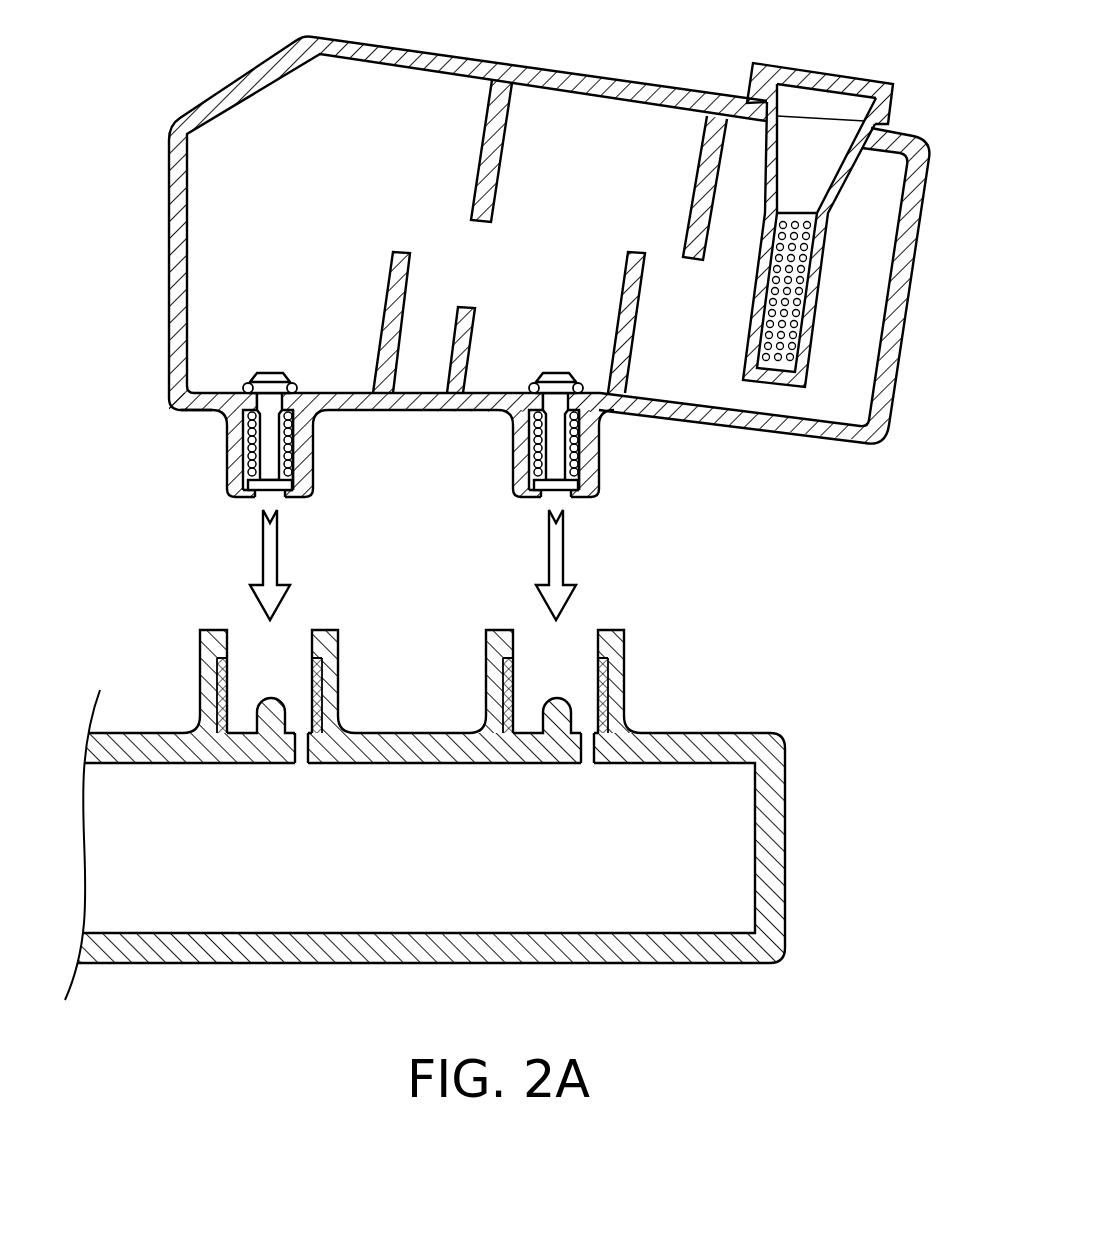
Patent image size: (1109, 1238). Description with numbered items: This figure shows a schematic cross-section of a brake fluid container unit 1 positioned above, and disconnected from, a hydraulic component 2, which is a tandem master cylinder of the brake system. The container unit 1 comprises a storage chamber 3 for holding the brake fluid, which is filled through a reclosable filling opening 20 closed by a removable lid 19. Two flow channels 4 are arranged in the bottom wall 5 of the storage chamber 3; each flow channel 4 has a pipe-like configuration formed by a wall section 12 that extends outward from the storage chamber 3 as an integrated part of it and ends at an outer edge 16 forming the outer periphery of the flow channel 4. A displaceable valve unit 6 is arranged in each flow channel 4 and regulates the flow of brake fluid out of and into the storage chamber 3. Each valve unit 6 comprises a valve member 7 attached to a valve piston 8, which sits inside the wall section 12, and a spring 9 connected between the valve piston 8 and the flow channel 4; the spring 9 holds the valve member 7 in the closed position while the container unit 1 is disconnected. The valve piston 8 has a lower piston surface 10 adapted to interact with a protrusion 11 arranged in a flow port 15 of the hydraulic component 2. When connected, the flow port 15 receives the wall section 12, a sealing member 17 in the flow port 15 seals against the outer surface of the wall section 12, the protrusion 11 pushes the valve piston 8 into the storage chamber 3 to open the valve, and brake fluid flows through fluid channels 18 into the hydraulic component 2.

The container unit 1 is at (543, 68).
The hydraulic component 2 is at (760, 733).
The storage chamber 3 is at (578, 130).
The flow channel 4 is at (305, 445).
The bottom wall 5 is at (413, 410).
The displaceable valve unit 6 is at (265, 372).
The valve member 7 is at (243, 387).
The valve piston 8 is at (275, 470).
The spring 9 is at (248, 438).
The lower piston surface 10 is at (255, 500).
The protrusion 11 is at (265, 715).
The wall section 12 is at (233, 465).
The flow port 15 is at (338, 700).
The outer edge 16 is at (305, 500).
The sealing member 17 is at (336, 665).
The fluid channel 18 is at (305, 750).
The removable lid 19 is at (820, 72).
The filling opening 20 is at (825, 108).